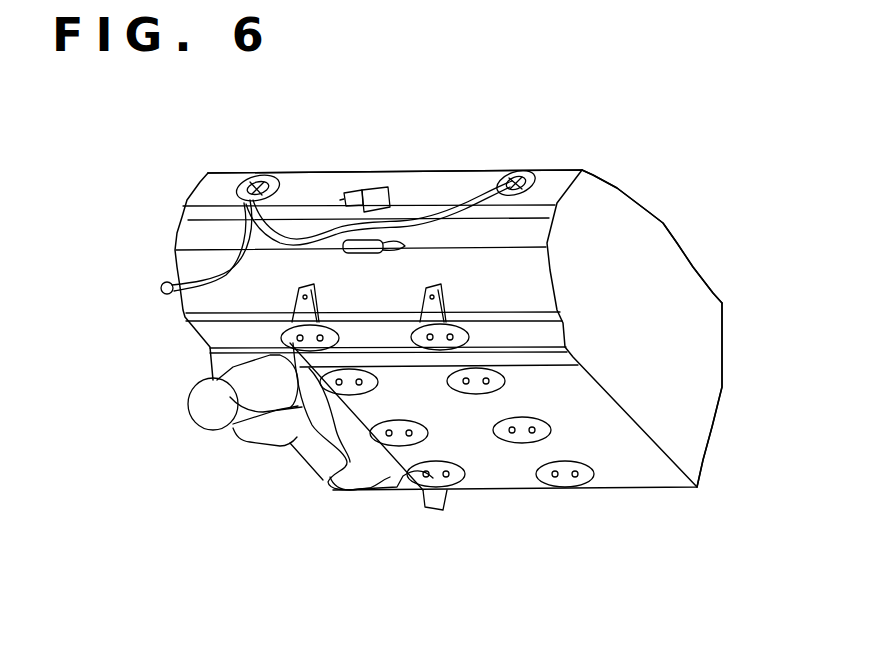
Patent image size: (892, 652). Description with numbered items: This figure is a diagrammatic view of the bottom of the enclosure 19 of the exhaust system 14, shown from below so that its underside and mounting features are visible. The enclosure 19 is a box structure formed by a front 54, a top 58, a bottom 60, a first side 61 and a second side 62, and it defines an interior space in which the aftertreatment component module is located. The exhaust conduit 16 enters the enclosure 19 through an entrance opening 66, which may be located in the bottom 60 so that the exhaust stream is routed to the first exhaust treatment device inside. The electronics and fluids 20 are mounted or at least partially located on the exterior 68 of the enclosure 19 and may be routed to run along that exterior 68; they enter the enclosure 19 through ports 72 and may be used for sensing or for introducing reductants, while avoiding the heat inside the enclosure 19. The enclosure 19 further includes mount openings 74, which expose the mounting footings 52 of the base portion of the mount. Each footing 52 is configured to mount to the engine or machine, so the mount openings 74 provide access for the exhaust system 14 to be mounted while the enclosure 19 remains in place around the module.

The exhaust system 14 is at (705, 132).
The exhaust conduit 16 is at (190, 412).
The enclosure 19 is at (685, 211).
The electronics and fluids 20 is at (354, 160).
The mounting footings 52 is at (428, 290).
The front 54 is at (397, 177).
The top 58 is at (578, 155).
The bottom 60 is at (473, 453).
The first side 61 is at (176, 338).
The second side 62 is at (665, 391).
The entrance opening 66 is at (280, 442).
The exterior 68 is at (615, 207).
The ports 72 is at (250, 178).
The mount openings 74 is at (323, 479).